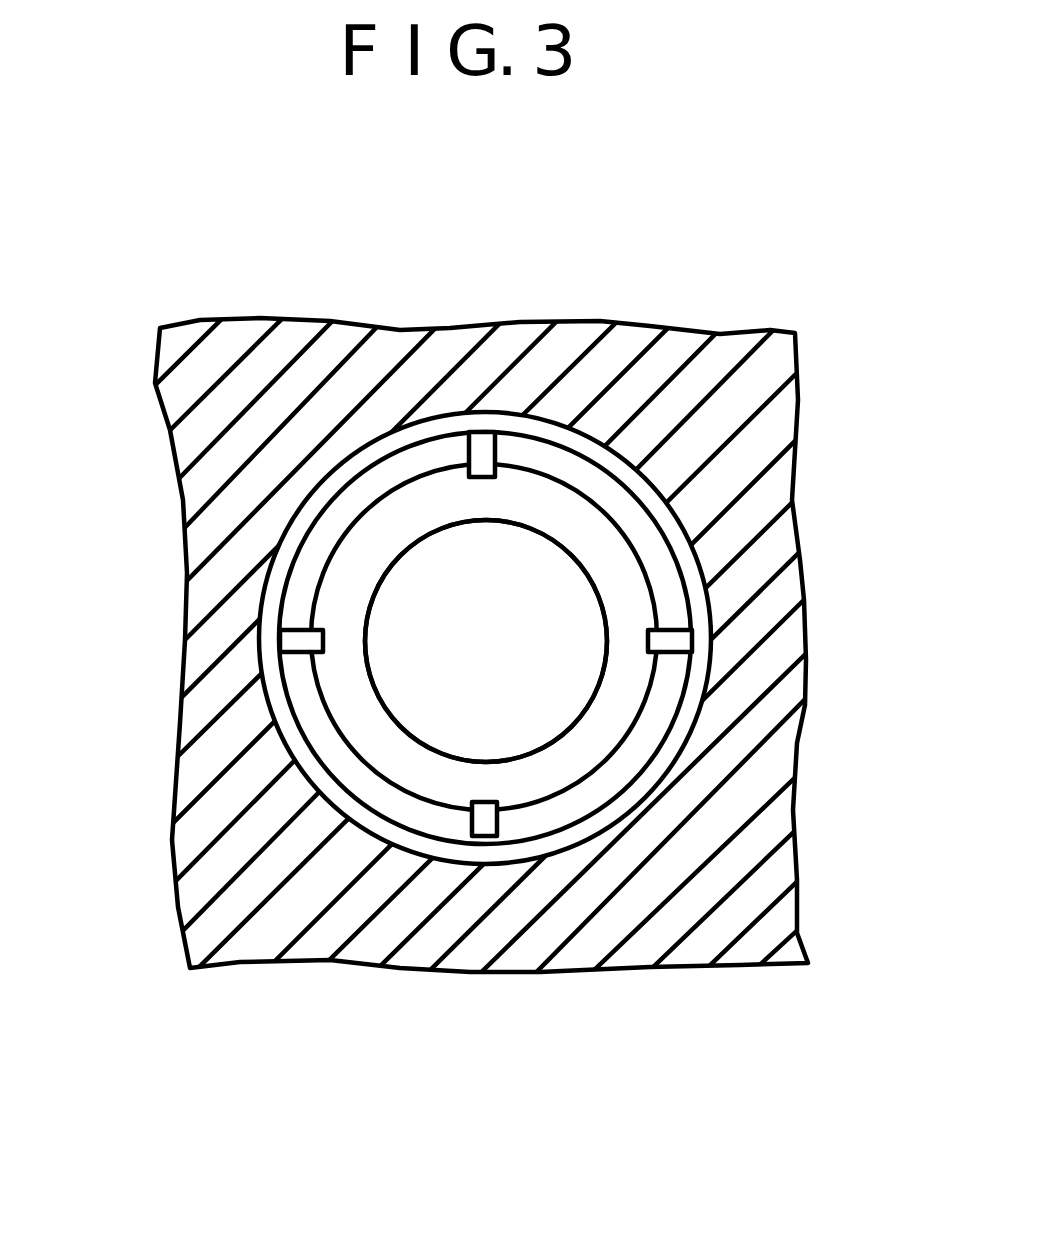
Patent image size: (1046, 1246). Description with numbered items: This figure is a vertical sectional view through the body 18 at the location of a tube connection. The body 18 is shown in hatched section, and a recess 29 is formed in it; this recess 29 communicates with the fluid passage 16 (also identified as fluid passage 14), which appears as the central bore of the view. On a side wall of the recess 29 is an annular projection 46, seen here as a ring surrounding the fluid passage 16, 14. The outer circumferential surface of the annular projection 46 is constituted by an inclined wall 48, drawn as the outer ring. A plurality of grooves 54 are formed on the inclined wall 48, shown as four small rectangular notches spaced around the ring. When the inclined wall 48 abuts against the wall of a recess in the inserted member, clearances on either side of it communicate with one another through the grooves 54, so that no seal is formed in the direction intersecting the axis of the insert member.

The body 18 is at (690, 336).
The recess 29 is at (365, 826).
The inclined wall 48 is at (637, 752).
The annular projection 46 is at (627, 688).
The fluid passage 16 is at (451, 655).
The fluid passage 14 is at (520, 655).
The groove 54 is at (486, 455).